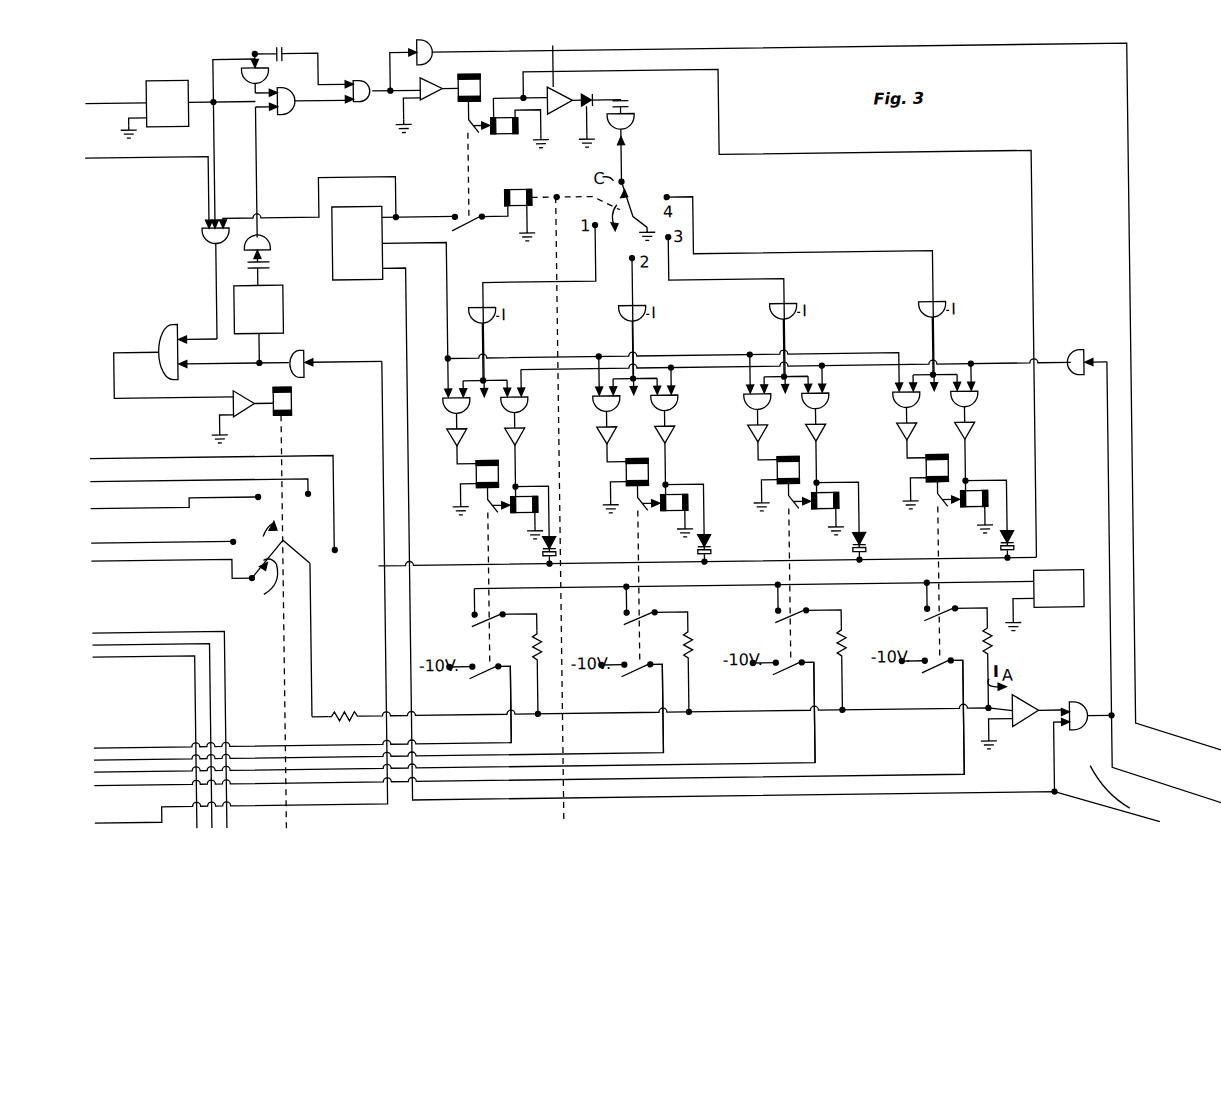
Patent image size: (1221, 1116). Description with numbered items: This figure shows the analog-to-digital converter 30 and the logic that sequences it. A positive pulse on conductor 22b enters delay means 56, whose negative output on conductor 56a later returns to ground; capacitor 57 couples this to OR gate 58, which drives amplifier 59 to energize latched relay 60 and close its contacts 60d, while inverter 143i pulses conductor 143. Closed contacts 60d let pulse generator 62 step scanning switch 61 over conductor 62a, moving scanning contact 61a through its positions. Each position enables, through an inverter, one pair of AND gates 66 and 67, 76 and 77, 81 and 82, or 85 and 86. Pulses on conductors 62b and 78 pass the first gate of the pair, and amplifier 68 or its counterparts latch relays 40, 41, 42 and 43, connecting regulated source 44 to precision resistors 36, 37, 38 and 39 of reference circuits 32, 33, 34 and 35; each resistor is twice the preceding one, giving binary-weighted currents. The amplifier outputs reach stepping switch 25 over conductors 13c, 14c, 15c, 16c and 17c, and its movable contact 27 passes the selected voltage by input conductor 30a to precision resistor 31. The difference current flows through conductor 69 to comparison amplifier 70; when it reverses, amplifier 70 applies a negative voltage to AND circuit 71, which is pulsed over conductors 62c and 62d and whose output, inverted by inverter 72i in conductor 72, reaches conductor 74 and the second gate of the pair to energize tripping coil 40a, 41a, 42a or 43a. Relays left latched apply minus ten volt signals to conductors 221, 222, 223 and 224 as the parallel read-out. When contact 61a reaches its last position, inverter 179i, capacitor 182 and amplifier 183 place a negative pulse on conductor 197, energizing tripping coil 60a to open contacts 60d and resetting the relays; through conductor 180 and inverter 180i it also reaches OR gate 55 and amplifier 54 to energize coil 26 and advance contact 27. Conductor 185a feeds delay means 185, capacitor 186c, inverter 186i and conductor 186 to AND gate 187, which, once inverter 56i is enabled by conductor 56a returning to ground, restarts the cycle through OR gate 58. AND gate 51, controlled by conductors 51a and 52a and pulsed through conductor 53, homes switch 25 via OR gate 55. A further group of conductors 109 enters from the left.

The conductor 22b is at (97, 96).
The delay means 56 is at (156, 74).
The output conductor 56a is at (207, 90).
The inverter 56i is at (252, 80).
The capacitor 57 is at (283, 46).
The AND gate 187 is at (297, 106).
The conductor 186 is at (260, 157).
The OR gate 58 is at (384, 106).
The inverter 143i is at (429, 48).
The conductor 143 is at (1132, 171).
The amplifier 59 is at (433, 100).
The relay 60 is at (480, 90).
The tripping coil 60a is at (500, 134).
The contacts 60d is at (452, 231).
The conductor 197 is at (726, 121).
The amplifier 183 is at (556, 87).
The capacitor 182 is at (636, 94).
The inverter 179i is at (637, 122).
The stepping switch 61 is at (512, 188).
The scanning contact 61a is at (632, 198).
The pulse generator 62 is at (357, 204).
The conductor 62a is at (445, 213).
The conductor 62b is at (449, 259).
The conductor 62c is at (410, 306).
The conductor 62d is at (1052, 772).
The conductor 52a is at (100, 153).
The conductor 51a is at (219, 194).
The AND gate 51 is at (206, 242).
The conductor 53 is at (326, 175).
The inverter 186i is at (272, 241).
The capacitor 186c is at (273, 268).
The delay means 185 is at (284, 297).
The conductor 185a is at (262, 341).
The OR gate 55 is at (165, 330).
The inverter 180i is at (303, 348).
The conductor 180 is at (382, 426).
The amplifier 54 is at (239, 416).
The operating coil 26 is at (294, 392).
The input line 13c is at (99, 456).
The input line 14c is at (111, 478).
The input line 15c is at (114, 506).
The input line 16c is at (123, 540).
The input line 17c is at (100, 561).
The stepping switch 25 is at (228, 563).
The movable scanning contact 27 is at (266, 587).
The input conductor 30a is at (310, 607).
The lines 109 is at (110, 627).
The conductor 221 is at (103, 740).
The conductor 222 is at (118, 752).
The conductor 223 is at (134, 764).
The conductor 224 is at (148, 778).
The precision resistor 31 is at (345, 710).
The conductor 69 is at (662, 696).
The AND gate 66 is at (442, 408).
The AND gate 67 is at (525, 411).
The amplifier 68 is at (441, 432).
The relay 40 is at (482, 553).
The tripping coil 40a is at (518, 518).
The AND circuit 76 is at (594, 407).
The AND circuit 77 is at (676, 403).
The relay 41 is at (632, 552).
The tripping coil 41a is at (668, 517).
The AND circuit 81 is at (742, 407).
The AND circuit 82 is at (828, 395).
The relay 42 is at (783, 546).
The tripping coil 42a is at (819, 514).
The AND circuit 85 is at (890, 402).
The AND circuit 86 is at (980, 402).
The relay 43 is at (932, 544).
The tripping coil 43a is at (968, 513).
The analog-to-digital converter 30 is at (725, 456).
The conductor 78 is at (708, 355).
The conductor 74 is at (1000, 354).
The inverter 72i is at (1077, 356).
The conductor 72 is at (1103, 436).
The regulated source of supply 44 is at (1060, 563).
The reference circuit 32 is at (504, 612).
The reference circuit 33 is at (657, 610).
The reference circuit 34 is at (808, 611).
The reference circuit 35 is at (963, 601).
The precision resistor 36 is at (540, 641).
The precision resistor 37 is at (690, 645).
The precision resistor 38 is at (844, 641).
The precision resistor 39 is at (989, 650).
The comparison amplifier 70 is at (1031, 709).
The AND circuit 71 is at (1080, 707).